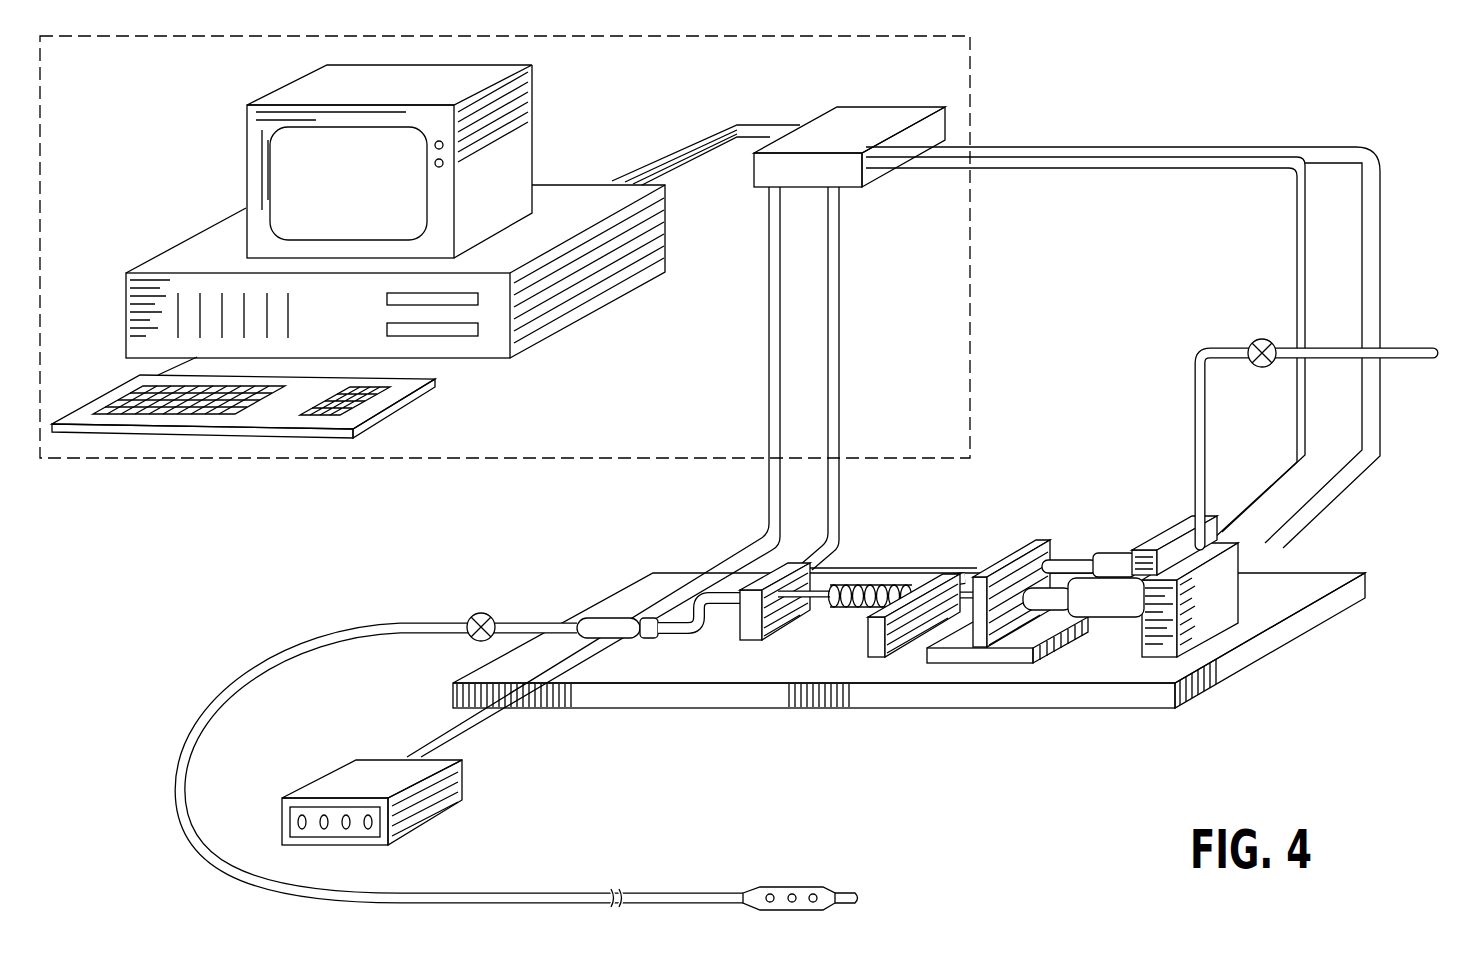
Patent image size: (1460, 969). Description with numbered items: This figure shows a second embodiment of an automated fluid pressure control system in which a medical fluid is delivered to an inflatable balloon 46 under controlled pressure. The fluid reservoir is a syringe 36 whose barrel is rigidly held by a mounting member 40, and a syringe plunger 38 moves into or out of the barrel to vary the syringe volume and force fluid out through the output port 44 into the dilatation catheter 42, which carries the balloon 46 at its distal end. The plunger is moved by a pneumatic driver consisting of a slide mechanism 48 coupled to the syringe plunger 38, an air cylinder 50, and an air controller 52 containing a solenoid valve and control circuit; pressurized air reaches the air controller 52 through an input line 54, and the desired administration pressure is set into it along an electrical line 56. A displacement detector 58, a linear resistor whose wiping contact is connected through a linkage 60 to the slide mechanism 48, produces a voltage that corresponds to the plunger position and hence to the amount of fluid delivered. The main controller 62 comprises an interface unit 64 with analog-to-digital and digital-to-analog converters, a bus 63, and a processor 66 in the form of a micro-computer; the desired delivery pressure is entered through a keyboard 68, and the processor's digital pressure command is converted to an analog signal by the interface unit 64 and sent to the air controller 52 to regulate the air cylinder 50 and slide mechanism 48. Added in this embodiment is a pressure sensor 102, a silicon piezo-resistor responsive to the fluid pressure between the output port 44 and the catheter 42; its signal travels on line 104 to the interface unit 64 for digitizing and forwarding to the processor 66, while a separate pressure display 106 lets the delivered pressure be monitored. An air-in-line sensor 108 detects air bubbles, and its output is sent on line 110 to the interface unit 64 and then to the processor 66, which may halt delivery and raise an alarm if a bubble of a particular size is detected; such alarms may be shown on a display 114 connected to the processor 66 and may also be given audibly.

The syringe 36 is at (848, 608).
The syringe plunger 38 is at (967, 587).
The mounting member 40 is at (893, 645).
The dilatation catheter 42 is at (395, 622).
The output port 44 is at (820, 588).
The dilatation balloon 46 is at (800, 887).
The slide mechanism 48 is at (993, 632).
The air cylinder 50 is at (1130, 600).
The air controller 52 is at (1222, 617).
The input line 54 is at (1287, 343).
The electrical line 56 is at (1313, 508).
The displacement detector 58 is at (1118, 550).
The linkage 60 is at (1072, 562).
The controller 62 is at (160, 462).
The bus 63 is at (683, 147).
The interface unit 64 is at (868, 113).
The processor 66 is at (612, 285).
The keyboard 68 is at (403, 398).
The pressure sensor 102 is at (610, 617).
The line 104 is at (769, 508).
The pressure display 106 is at (430, 805).
The air-in-line sensor 108 is at (748, 623).
The line 110 is at (839, 495).
The display 114 is at (285, 168).